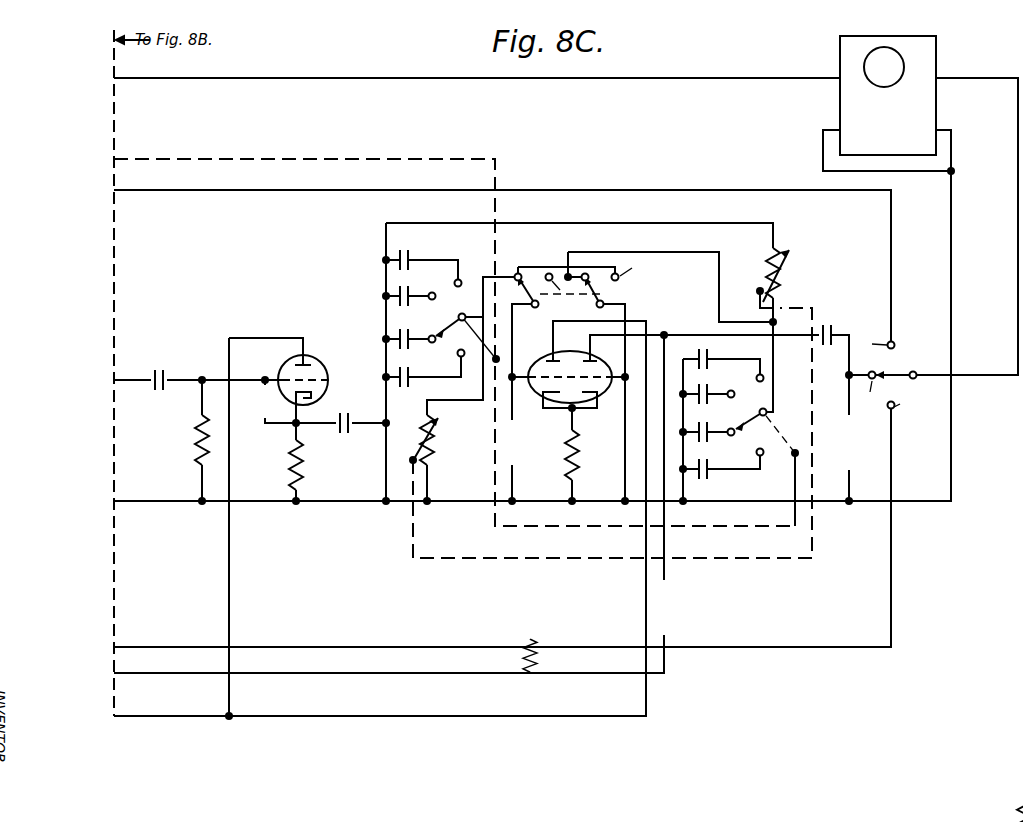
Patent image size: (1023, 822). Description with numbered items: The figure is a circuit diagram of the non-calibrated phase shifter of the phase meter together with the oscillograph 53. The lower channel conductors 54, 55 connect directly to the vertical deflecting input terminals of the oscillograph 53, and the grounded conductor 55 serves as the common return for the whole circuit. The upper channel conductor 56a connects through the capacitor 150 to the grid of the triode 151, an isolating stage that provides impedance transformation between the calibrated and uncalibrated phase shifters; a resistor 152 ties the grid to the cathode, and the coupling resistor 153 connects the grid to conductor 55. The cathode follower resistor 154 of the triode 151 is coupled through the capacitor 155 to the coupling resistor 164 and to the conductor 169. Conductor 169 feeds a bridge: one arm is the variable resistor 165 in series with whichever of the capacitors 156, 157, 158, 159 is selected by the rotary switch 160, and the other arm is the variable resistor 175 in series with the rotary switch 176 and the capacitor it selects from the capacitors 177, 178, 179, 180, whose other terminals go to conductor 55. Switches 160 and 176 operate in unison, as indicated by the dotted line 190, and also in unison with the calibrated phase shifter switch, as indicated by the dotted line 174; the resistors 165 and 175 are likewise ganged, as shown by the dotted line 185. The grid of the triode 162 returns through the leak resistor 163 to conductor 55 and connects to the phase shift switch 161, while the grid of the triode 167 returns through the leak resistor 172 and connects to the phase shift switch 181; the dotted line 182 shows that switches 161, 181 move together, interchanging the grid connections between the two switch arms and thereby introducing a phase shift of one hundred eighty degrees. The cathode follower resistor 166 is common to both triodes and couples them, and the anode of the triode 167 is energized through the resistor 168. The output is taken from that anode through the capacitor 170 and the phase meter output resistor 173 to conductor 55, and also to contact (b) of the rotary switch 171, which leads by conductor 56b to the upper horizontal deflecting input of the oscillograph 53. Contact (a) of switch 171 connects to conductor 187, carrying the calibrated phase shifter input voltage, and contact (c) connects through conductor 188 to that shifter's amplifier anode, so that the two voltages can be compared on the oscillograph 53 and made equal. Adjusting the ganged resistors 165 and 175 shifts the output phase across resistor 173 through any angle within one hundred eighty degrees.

The oscillograph 53 is at (838, 52).
The lower channel conductor 54 is at (176, 78).
The conductor 55 is at (822, 145).
The conductor 56a is at (131, 380).
The conductor 56b is at (1017, 166).
The capacitor 150 is at (165, 378).
The triode 151 is at (318, 366).
The resistor 152 is at (262, 412).
The coupling resistor 153 is at (198, 430).
The cathode follower resistor 154 is at (292, 460).
The capacitor 155 is at (341, 436).
The capacitor 156 is at (412, 382).
The capacitor 157 is at (410, 345).
The capacitor 158 is at (410, 296).
The capacitor 159 is at (410, 262).
The rotary switch 160 is at (443, 326).
The 180° phase shift switch 161 is at (530, 292).
The triode 162 is at (536, 370).
The leak resistor 163 is at (515, 436).
The coupling resistor 164 is at (382, 470).
The variable resistor 165 is at (434, 440).
The cathode follower resistor 166 is at (578, 462).
The triode 167 is at (598, 368).
The resistor 168 is at (672, 606).
The conductor 169 is at (385, 240).
The capacitor 170 is at (832, 333).
The rotary switch 171 is at (888, 375).
The leak resistor 172 is at (574, 410).
The phase meter output resistor 173 is at (856, 440).
The dotted line 174 is at (178, 159).
The variable resistor 175 is at (782, 272).
The rotary switch 176 is at (745, 420).
The capacitor 177 is at (708, 474).
The capacitor 178 is at (708, 440).
The capacitor 179 is at (708, 396).
The capacitor 180 is at (708, 360).
The 180° phase shift switch 181 is at (606, 302).
The dotted line 182 is at (550, 296).
The dotted line 185 is at (412, 528).
The conductor 187 is at (136, 647).
The conductor 188 is at (182, 190).
The dotted line 190 is at (600, 527).